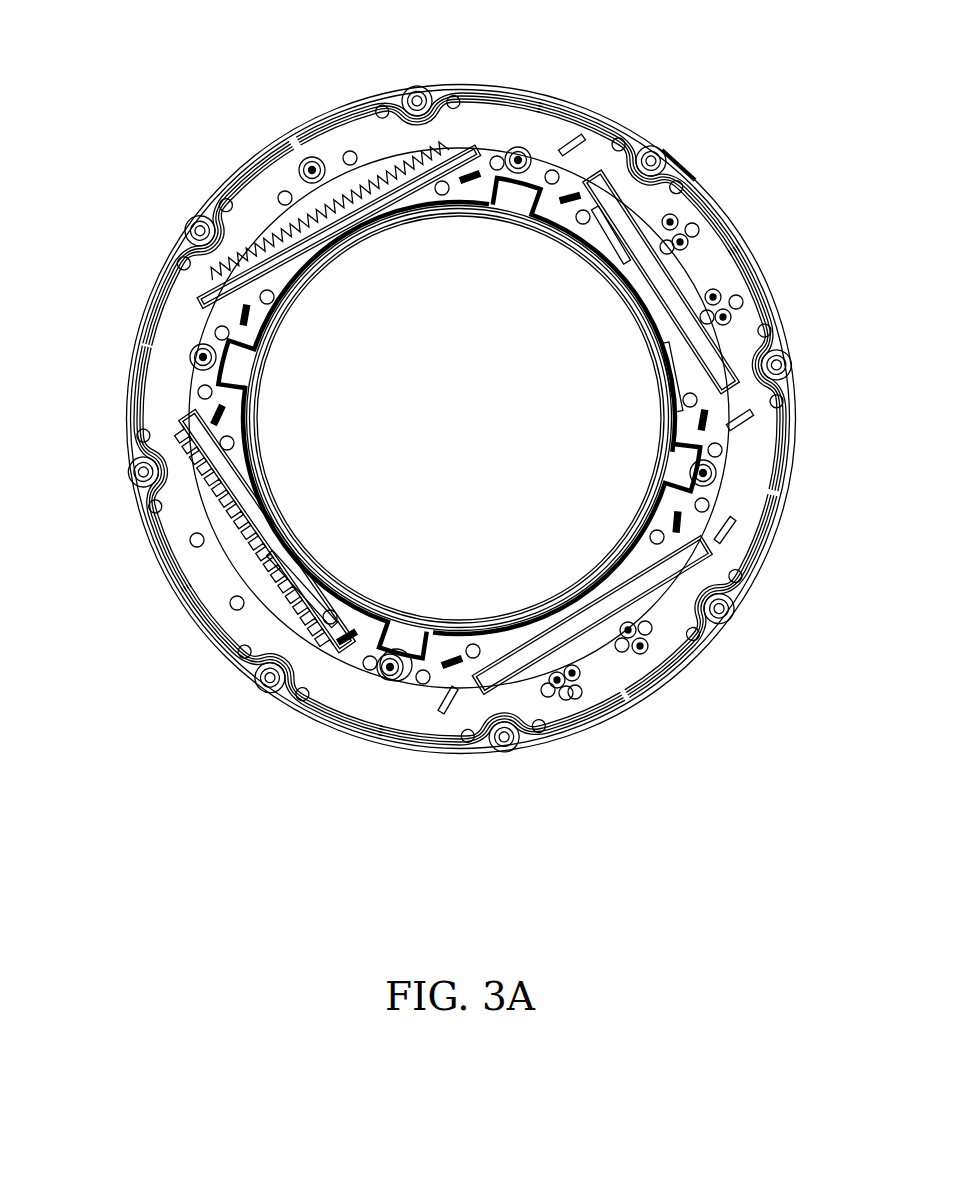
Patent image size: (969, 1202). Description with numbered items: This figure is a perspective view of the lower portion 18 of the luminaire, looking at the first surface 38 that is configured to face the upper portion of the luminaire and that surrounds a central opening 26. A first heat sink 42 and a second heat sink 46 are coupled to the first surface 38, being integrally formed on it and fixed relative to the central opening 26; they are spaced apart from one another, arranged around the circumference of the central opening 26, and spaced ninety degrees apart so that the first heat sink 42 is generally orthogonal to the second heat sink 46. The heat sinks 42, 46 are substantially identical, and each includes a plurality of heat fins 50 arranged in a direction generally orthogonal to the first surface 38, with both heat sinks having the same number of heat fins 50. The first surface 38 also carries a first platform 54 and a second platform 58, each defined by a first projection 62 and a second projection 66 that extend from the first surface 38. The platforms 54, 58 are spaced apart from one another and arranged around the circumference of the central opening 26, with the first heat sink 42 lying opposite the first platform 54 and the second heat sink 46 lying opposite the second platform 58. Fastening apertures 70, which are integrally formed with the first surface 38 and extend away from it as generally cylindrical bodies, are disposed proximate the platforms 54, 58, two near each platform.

The lower portion 18 is at (181, 57).
The central opening 26 is at (596, 428).
The first surface 38 is at (192, 322).
The first heat sink 42 is at (160, 405).
The second heat sink 46 is at (492, 133).
The heat fins 50 is at (358, 182).
The first platform 54 is at (655, 283).
The second platform 58 is at (585, 612).
The first projection 62 is at (587, 142).
The second projection 66 is at (758, 424).
The fastening apertures 70 is at (672, 224).